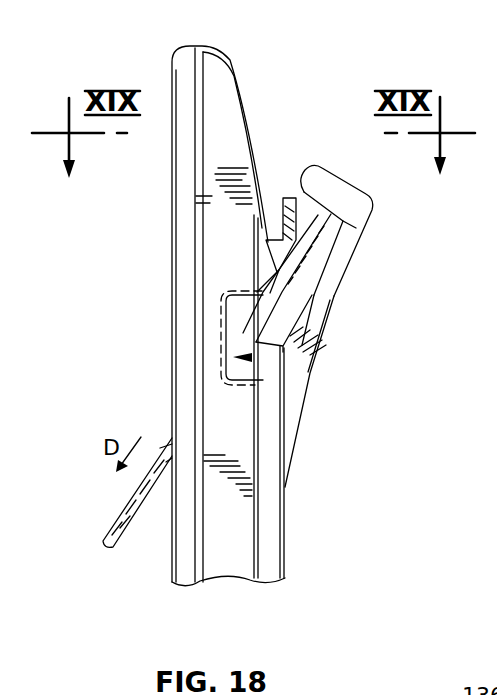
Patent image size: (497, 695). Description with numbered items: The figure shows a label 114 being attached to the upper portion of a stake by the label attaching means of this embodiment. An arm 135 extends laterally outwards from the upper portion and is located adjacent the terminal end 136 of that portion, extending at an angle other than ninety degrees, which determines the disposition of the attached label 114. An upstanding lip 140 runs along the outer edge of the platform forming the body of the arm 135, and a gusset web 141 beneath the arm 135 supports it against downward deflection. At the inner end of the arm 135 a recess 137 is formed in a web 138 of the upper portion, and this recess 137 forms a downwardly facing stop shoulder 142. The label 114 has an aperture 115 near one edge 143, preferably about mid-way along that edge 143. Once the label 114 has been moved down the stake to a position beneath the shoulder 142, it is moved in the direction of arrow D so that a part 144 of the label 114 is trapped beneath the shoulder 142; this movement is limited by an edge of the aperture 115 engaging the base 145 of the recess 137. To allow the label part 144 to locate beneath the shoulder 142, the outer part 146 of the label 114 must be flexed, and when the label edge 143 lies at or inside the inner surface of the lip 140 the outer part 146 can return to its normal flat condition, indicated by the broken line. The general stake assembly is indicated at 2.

The clip 2 is at (296, 489).
The label 114 is at (109, 514).
The aperture 115 is at (165, 455).
The arm 135 is at (350, 366).
The terminal end 136 is at (203, 46).
The recess 137 is at (306, 365).
The web 138 is at (243, 508).
The lip 140 is at (320, 177).
The gusset web 141 is at (338, 299).
The stop shoulder 142 is at (226, 313).
The label edge 143 is at (288, 197).
The label part 144 is at (328, 318).
The base of recess 145 is at (312, 401).
The outer part of label 146 is at (283, 231).